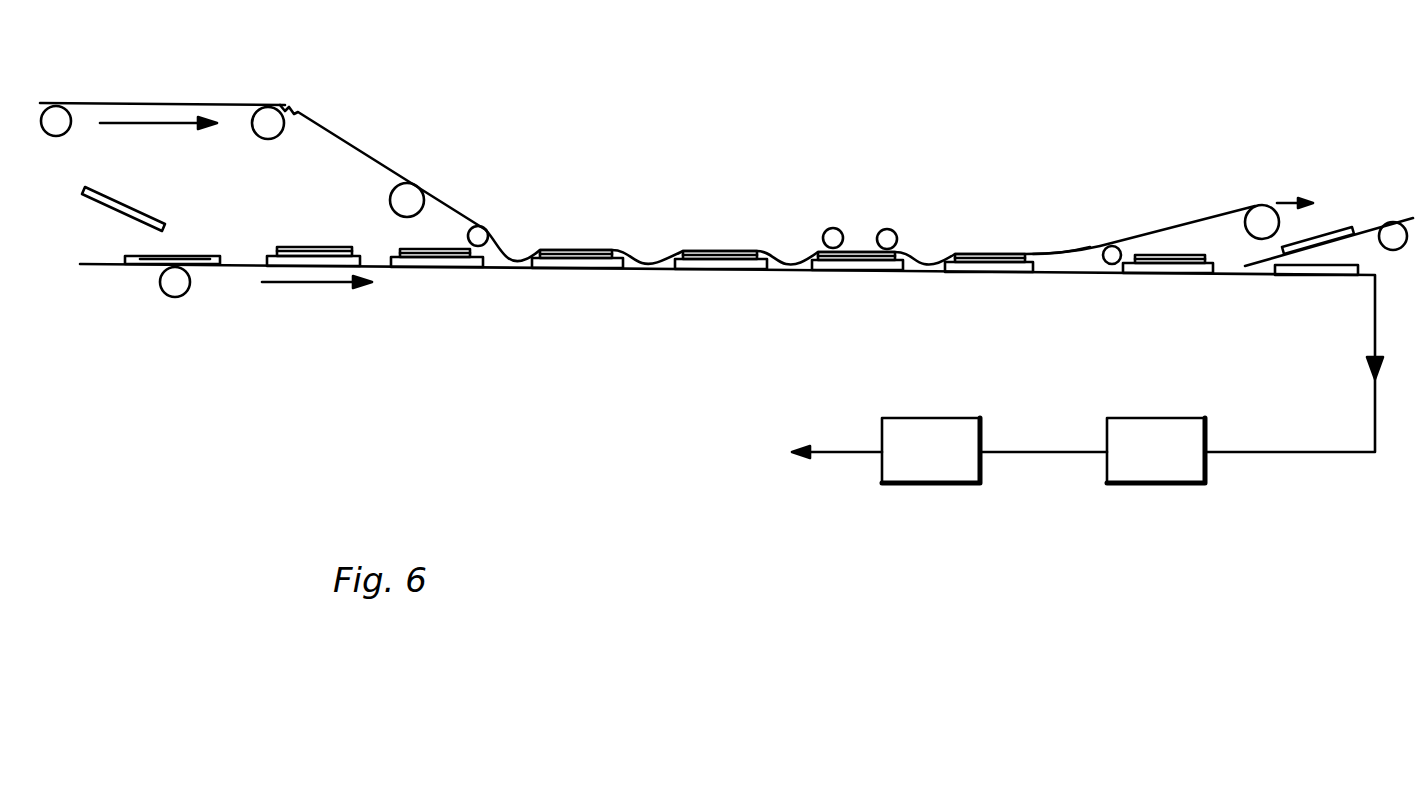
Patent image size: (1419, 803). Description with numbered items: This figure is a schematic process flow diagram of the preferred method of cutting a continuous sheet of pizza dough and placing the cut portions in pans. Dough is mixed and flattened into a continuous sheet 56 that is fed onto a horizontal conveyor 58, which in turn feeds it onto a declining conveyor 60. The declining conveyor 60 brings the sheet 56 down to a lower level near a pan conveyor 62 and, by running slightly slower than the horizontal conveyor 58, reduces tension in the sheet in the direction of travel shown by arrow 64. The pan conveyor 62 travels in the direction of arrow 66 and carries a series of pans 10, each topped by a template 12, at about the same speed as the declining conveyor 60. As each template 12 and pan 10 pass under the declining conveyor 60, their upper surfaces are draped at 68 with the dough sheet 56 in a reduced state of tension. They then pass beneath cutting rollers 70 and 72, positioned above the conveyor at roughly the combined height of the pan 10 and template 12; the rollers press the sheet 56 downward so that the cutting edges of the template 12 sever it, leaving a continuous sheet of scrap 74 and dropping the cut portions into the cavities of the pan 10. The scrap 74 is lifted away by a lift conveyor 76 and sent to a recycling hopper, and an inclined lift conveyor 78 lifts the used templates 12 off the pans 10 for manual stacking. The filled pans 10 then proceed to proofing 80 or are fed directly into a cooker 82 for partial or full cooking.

The pan 10 is at (142, 265).
The template 12 is at (157, 215).
The continuous sheet 56 is at (117, 103).
The horizontal conveyor 58 is at (265, 124).
The declining conveyor 60 is at (420, 193).
The pan conveyor 62 is at (180, 285).
The arrow 64 is at (165, 125).
The arrow 66 is at (292, 282).
The draping point 68 is at (518, 258).
The cutting roller 70 is at (833, 228).
The cutting roller 72 is at (890, 236).
The sheet of scrap 74 is at (1087, 250).
The lift conveyor 76 is at (1125, 232).
The lift conveyor 78 is at (1393, 236).
The proofing step 80 is at (1138, 465).
The cooker 82 is at (900, 465).